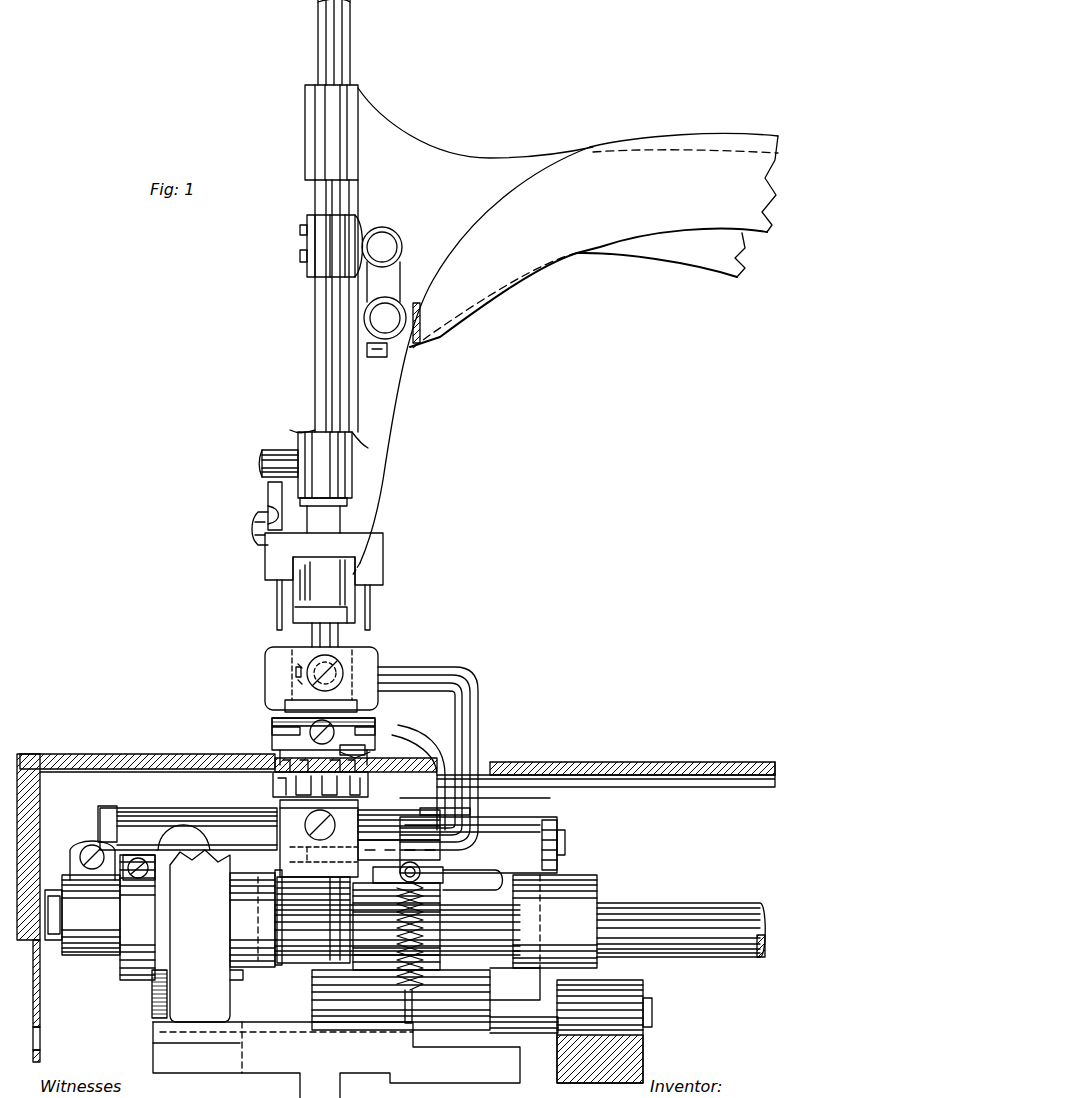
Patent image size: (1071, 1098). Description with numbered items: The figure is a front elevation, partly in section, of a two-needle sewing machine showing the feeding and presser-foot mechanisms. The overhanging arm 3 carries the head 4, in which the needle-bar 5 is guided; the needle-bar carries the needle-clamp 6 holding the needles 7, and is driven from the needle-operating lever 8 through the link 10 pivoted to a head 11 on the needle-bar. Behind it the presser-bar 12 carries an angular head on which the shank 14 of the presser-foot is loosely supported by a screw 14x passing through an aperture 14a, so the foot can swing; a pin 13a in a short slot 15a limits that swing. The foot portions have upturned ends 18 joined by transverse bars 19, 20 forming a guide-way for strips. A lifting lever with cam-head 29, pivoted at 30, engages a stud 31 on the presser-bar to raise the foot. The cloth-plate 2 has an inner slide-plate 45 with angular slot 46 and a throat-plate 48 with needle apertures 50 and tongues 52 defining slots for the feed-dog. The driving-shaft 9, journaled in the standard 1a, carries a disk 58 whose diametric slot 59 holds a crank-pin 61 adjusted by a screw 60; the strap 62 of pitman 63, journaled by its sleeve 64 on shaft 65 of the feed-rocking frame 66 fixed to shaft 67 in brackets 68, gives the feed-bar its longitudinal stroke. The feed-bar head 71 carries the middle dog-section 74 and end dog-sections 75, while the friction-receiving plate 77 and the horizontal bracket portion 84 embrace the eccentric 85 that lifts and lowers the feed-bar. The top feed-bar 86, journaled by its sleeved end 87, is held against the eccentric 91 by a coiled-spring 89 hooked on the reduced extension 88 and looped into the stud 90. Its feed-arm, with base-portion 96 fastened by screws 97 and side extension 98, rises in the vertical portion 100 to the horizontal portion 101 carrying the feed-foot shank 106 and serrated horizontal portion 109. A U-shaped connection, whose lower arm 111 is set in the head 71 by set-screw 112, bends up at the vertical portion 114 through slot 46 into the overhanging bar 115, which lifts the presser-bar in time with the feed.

The standard 1a is at (165, 1003).
The cloth-plate 2 is at (680, 778).
The overhanging arm 3 is at (703, 252).
The head 4 is at (372, 478).
The needle-bar 5 is at (318, 343).
The needle-clamp 6 is at (372, 562).
The needles 7 is at (277, 617).
The needle-operating lever 8 is at (612, 225).
The driving-shaft 9 is at (728, 910).
The link 10 is at (400, 275).
The head 11 is at (348, 238).
The presser-bar 12 is at (282, 655).
The pin 13a is at (296, 671).
The shank of the presser-foot 14 is at (296, 676).
The aperture 14a is at (360, 667).
The screw 14x is at (340, 668).
The slot 15a is at (298, 681).
The upturned portions 18 is at (276, 740).
The transverse bar 19 is at (272, 730).
The transverse bar 20 is at (300, 712).
The cam-head 29 is at (268, 495).
The pivot 30 is at (256, 520).
The stud or pin 31 is at (262, 462).
The inner slide-plate 45 is at (600, 765).
The angular slot 46 is at (500, 765).
The throat-plate 48 is at (225, 758).
The needle apertures 50 is at (320, 778).
The tongues 52 is at (319, 838).
The disk 58 is at (130, 975).
The diametric slot 59 is at (148, 862).
The screw 60 is at (165, 878).
The crank-pin 61 is at (52, 940).
The strap 62 is at (97, 947).
The pitman 63 is at (95, 845).
The sleeve 64 is at (132, 812).
The shaft 65 is at (566, 843).
The feed-rocking frame 66 is at (258, 825).
The shaft 67 is at (652, 1012).
The brackets 68 is at (160, 1000).
The head 71 is at (305, 878).
The middle dog-section 74 is at (350, 790).
The end dog-sections 75 is at (282, 775).
The friction-receiving plate 77 is at (338, 878).
The horizontal portion 84 is at (282, 960).
The eccentric 85 is at (270, 968).
The top feed-bar 86 is at (525, 905).
The sleeved end 87 is at (552, 800).
The reduced extension 88 is at (440, 888).
The coiled-spring 89 is at (425, 975).
The stud or bracket 90 is at (412, 1030).
The eccentric 91 is at (395, 935).
The horizontal base-portion 96 is at (480, 850).
The screws 97 is at (500, 845).
The side extension 98 is at (470, 835).
The vertical portion 100 is at (472, 810).
The horizontal portion 101 is at (337, 730).
The shank 106 is at (362, 725).
The horizontal portion 109 is at (352, 745).
The lower arm 111 is at (382, 852).
The set-screw 112 is at (316, 854).
The vertical portion 114 is at (478, 765).
The overhanging bar 115 is at (440, 673).